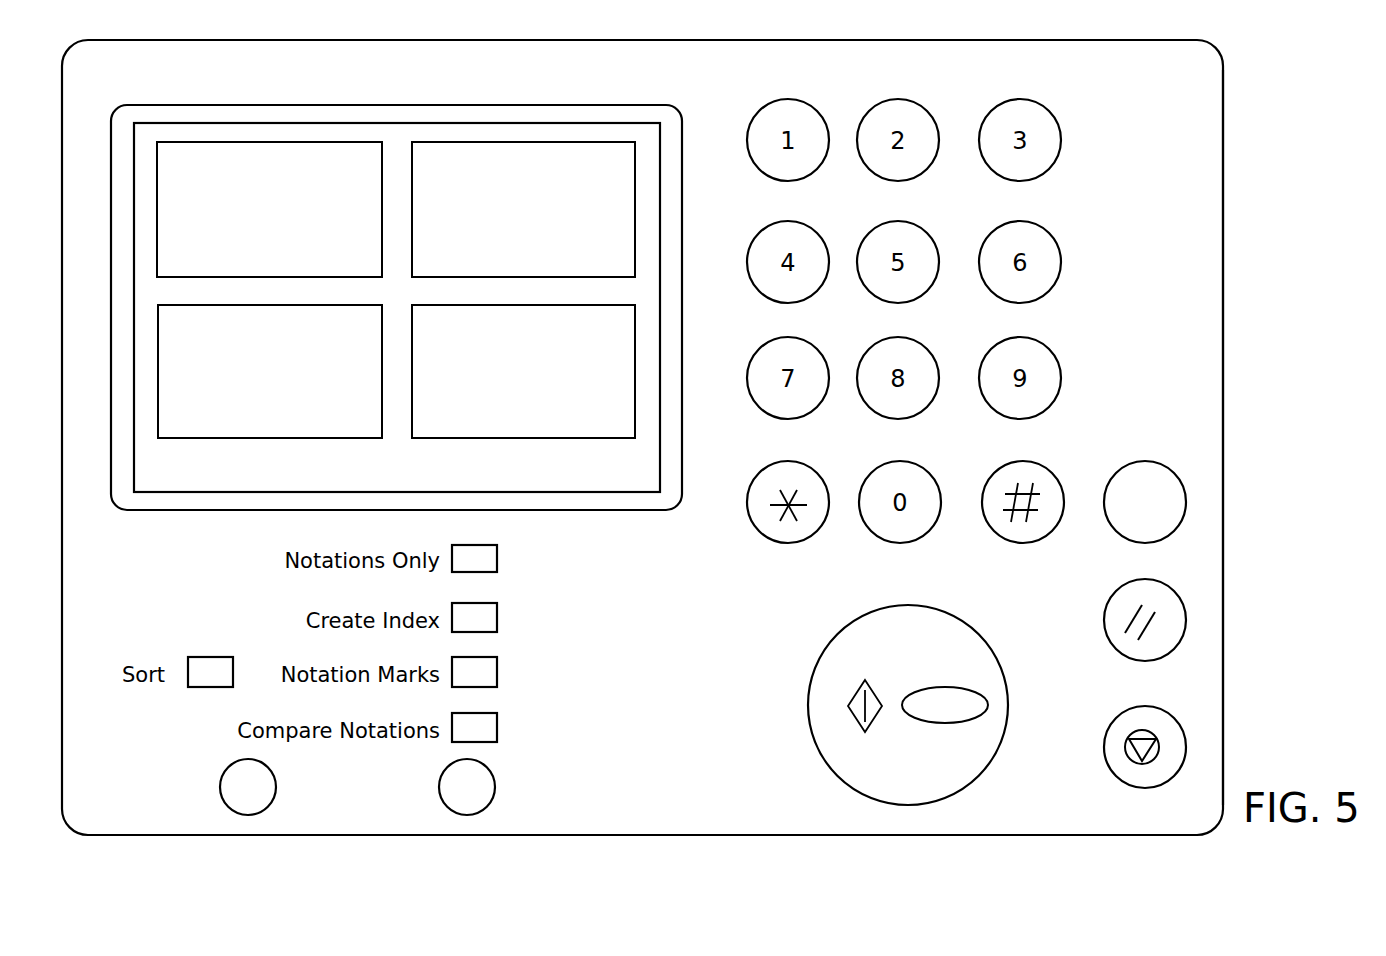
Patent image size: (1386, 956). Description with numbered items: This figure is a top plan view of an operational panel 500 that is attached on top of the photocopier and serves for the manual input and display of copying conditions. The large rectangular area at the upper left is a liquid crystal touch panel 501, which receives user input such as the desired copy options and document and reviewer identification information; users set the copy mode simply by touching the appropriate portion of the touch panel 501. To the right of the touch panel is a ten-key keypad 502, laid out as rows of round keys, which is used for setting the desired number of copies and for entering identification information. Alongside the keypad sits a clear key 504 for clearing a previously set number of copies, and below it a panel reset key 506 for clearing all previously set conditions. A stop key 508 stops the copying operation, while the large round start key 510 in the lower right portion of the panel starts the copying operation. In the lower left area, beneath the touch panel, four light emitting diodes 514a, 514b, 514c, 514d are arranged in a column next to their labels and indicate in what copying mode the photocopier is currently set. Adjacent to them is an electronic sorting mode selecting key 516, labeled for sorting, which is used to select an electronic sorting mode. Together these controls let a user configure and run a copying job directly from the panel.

The operational panel 500 is at (1224, 97).
The liquid crystal touch panel 501 is at (538, 123).
The 10-key keypad 502 is at (1204, 129).
The clear key 504 is at (1131, 528).
The panel reset key 506 is at (1108, 605).
The stop key 508 is at (1112, 733).
The start key 510 is at (818, 727).
The light emitting diode 514a is at (497, 556).
The light emitting diode 514b is at (497, 616).
The light emitting diode 514c is at (497, 671).
The light emitting diode 514d is at (497, 727).
The electronic sorting mode selecting key 516 is at (213, 666).